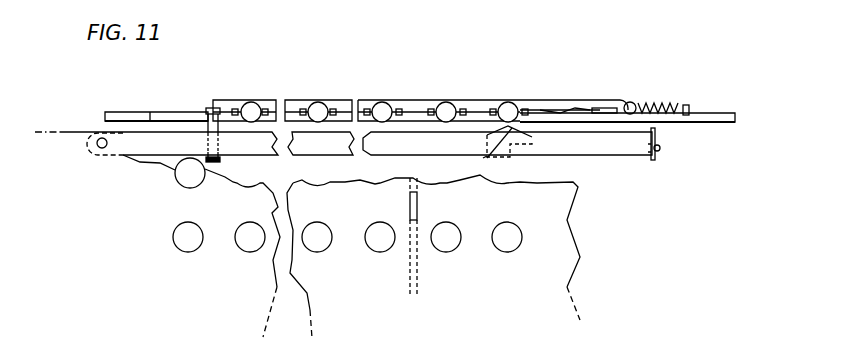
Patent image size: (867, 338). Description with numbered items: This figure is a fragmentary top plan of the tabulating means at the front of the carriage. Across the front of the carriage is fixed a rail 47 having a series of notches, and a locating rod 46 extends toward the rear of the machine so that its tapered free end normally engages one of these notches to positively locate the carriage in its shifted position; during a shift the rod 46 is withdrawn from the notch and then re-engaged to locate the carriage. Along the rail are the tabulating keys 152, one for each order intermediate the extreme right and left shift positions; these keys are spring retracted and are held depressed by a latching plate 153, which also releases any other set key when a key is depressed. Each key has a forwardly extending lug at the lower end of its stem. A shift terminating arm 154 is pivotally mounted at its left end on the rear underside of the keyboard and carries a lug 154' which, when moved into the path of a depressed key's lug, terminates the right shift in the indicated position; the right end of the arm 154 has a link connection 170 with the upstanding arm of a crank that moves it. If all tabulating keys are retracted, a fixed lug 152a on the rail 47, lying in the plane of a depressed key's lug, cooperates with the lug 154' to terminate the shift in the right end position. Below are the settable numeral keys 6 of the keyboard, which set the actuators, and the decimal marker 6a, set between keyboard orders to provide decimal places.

The carriage rail 47 is at (122, 112).
The fixed lug 152a is at (205, 112).
The latching plate 153 is at (417, 104).
The tabulating key 152 is at (500, 102).
The shift terminating arm 154 is at (356, 154).
The lug of the shift terminating arm 154' is at (461, 166).
The link connection 170 is at (657, 157).
The locating rod 46 is at (222, 161).
The settable numeral keys 6 is at (176, 184).
The decimal marker 6a is at (409, 200).